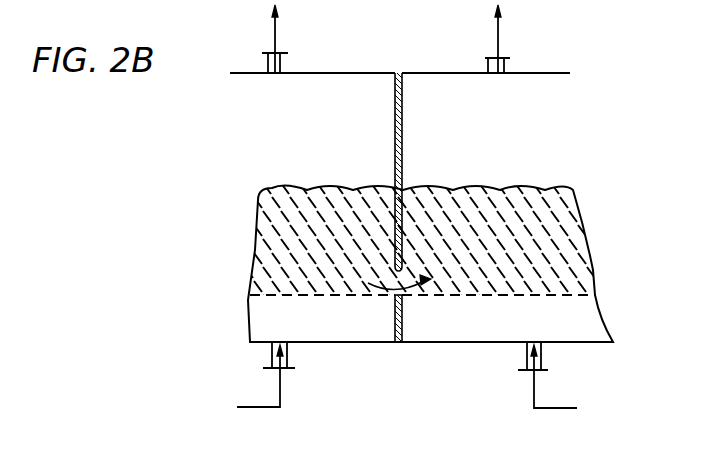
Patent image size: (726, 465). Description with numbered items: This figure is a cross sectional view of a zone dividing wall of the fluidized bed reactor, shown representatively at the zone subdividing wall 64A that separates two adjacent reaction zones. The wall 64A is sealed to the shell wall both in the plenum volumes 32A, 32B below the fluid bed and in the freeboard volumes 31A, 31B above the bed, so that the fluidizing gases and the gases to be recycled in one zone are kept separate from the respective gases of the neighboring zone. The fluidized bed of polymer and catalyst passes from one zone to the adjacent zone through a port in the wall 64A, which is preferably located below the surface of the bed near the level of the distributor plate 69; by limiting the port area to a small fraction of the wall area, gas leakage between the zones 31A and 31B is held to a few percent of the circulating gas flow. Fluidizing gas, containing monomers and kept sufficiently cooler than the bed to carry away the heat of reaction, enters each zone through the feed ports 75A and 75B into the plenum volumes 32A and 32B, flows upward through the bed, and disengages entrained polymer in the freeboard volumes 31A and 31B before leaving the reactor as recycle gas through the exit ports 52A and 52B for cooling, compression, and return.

The freeboard volume 31A is at (243, 53).
The freeboard volume 31B is at (580, 65).
The exit port 52A is at (286, 70).
The exit port 52B is at (485, 68).
The zone subdividing wall 64A is at (395, 140).
The distributor plate 69 is at (550, 297).
The plenum volume 32A is at (340, 332).
The plenum volume 32B is at (527, 333).
The fluidizing gas feed port 75A is at (294, 366).
The fluidizing gas feed port 75B is at (525, 370).